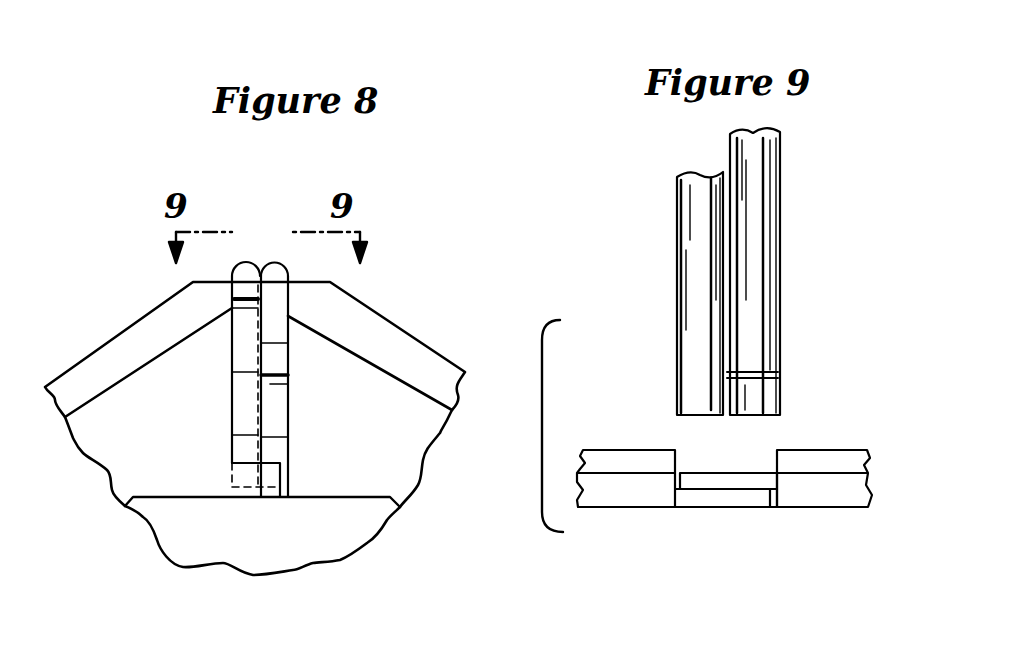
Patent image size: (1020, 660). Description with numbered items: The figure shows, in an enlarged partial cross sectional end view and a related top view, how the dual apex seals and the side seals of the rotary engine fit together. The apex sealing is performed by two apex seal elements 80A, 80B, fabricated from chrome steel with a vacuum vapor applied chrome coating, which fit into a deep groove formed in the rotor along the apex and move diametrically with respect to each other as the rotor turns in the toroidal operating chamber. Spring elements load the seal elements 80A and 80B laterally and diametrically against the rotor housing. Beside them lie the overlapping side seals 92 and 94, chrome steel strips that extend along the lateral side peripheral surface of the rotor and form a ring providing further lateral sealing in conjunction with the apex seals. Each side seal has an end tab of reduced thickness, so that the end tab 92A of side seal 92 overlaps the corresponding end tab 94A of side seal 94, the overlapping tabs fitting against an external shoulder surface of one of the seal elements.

In FIG. 8, the apex seal element 80A is at (250, 283).
In FIG. 9, the apex seal element 80A is at (690, 265).
In FIG. 8, the apex seal element 80B is at (275, 283).
In FIG. 9, the apex seal element 80B is at (783, 283).
In FIG. 8, the side seal 92 is at (137, 407).
In FIG. 9, the side seal 92 is at (637, 488).
In FIG. 9, the end tab 92A is at (725, 498).
In FIG. 8, the side seal 94 is at (388, 333).
In FIG. 9, the side seal 94 is at (822, 458).
In FIG. 9, the end tab 94A is at (703, 477).